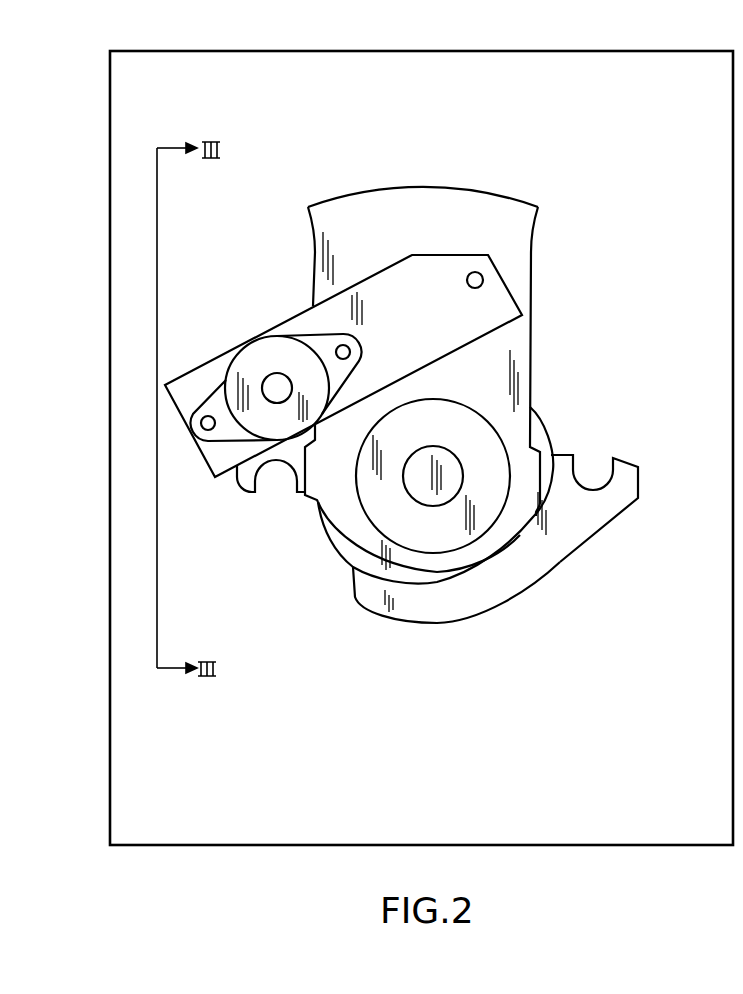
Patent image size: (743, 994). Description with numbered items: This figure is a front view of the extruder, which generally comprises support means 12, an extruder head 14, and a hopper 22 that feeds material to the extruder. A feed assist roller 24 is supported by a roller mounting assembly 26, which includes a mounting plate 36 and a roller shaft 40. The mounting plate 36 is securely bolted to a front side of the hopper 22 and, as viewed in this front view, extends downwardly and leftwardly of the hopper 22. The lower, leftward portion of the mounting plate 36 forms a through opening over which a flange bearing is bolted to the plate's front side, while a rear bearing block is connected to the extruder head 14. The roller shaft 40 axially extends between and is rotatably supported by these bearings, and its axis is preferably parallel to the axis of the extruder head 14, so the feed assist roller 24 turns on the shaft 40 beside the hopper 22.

The support means 12 is at (665, 108).
The extruder head 14 is at (367, 545).
The hopper 22 is at (503, 233).
The feed assist roller 24 is at (249, 330).
The roller mounting assembly 26 is at (343, 355).
The mounting plate 36 is at (430, 330).
The roller shaft 40 is at (270, 382).